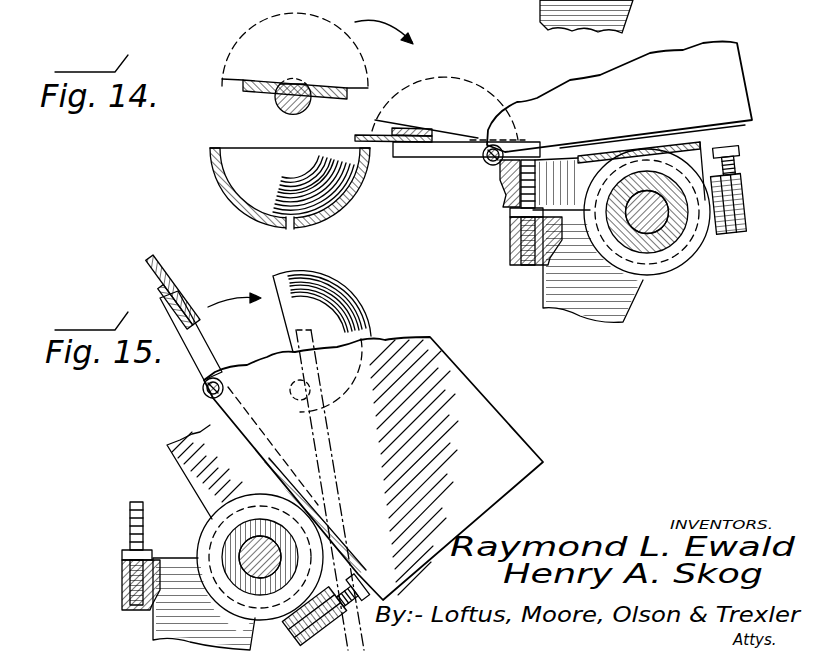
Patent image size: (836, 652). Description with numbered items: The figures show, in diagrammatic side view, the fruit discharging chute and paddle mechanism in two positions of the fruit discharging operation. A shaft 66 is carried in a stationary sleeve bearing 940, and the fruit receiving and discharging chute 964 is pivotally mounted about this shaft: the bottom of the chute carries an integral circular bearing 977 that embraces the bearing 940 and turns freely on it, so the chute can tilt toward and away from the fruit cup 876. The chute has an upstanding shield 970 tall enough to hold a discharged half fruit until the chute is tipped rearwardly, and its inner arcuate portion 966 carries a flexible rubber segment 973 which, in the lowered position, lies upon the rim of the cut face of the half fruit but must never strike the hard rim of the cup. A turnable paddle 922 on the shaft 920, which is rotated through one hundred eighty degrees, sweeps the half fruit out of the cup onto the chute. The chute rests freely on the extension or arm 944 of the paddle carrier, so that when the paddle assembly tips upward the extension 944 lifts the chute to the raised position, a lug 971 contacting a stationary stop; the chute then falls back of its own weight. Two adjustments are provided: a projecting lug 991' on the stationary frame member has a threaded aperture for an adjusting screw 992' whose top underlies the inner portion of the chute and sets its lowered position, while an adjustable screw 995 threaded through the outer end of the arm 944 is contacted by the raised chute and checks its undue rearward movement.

In FIG. 14, the shaft 66 is at (658, 228).
In FIG. 15, the shaft 66 is at (258, 552).
In FIG. 14, the half drum 876 is at (212, 187).
In FIG. 14, the shaft 920 is at (280, 113).
In FIG. 14, the fruit discharging paddle 922 is at (240, 95).
In FIG. 14, the stationary sleeve bearing 940 is at (623, 318).
In FIG. 15, the stationary sleeve bearing 940 is at (170, 622).
In FIG. 14, the extension 944 is at (560, 157).
In FIG. 15, the extension 944 is at (203, 463).
In FIG. 14, the fruit receiving and discharging chute 964 is at (442, 153).
In FIG. 15, the fruit receiving and discharging chute 964 is at (203, 353).
In FIG. 15, the serrated strip 966 is at (187, 300).
In FIG. 14, the upstanding shield 970 is at (727, 72).
In FIG. 15, the upstanding shield 970 is at (518, 452).
In FIG. 14, the lug 971 is at (741, 210).
In FIG. 15, the lug 971 is at (298, 636).
In FIG. 14, the flexible segment 973 is at (374, 142).
In FIG. 15, the flexible segment 973 is at (158, 268).
In FIG. 14, the circular bearing 977 is at (693, 246).
In FIG. 15, the circular bearing 977 is at (260, 557).
In FIG. 14, the projecting lug 991' is at (494, 236).
In FIG. 15, the projecting lug 991' is at (110, 580).
In FIG. 14, the adjusting screw 992' is at (481, 188).
In FIG. 15, the adjusting screw 992' is at (105, 526).
In FIG. 14, the adjustable screw 995 is at (737, 166).
In FIG. 15, the adjustable screw 995 is at (357, 577).